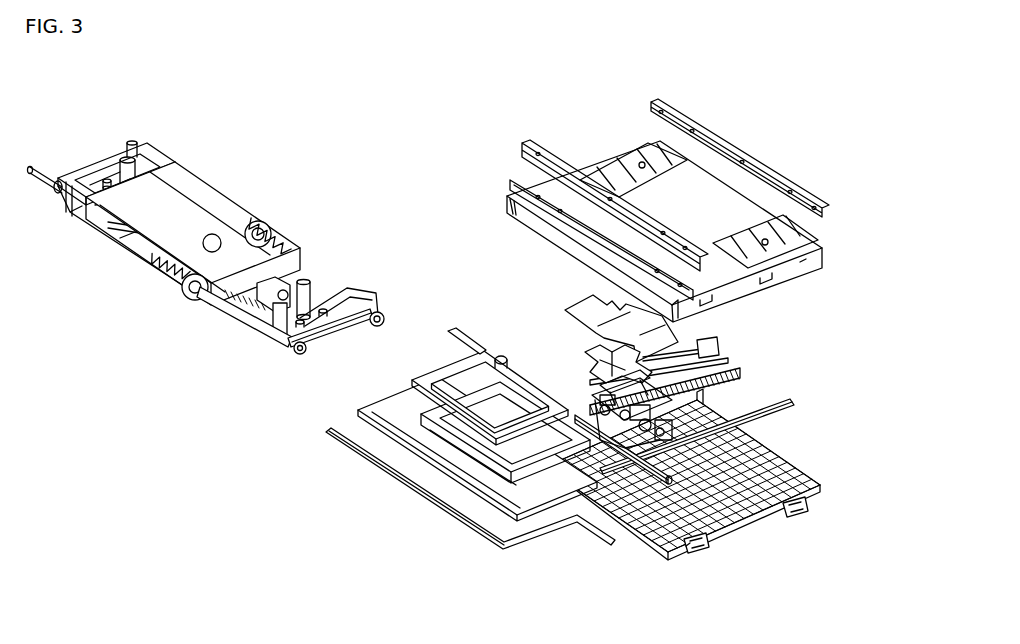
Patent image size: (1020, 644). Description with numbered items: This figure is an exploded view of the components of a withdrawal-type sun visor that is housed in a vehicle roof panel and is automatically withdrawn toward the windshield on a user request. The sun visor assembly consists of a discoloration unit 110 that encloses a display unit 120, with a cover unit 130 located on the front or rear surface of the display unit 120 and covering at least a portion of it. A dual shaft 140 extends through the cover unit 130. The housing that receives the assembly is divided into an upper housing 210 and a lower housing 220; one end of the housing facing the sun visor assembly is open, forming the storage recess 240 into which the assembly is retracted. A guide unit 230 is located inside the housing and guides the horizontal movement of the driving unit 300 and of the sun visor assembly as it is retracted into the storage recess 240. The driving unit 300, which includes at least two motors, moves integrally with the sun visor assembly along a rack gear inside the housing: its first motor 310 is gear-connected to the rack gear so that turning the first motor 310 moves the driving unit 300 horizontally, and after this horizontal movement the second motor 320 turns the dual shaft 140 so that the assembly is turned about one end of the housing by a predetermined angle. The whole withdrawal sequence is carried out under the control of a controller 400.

The discoloration unit 110 is at (540, 495).
The display unit 120 is at (497, 452).
The cover unit 130 is at (470, 422).
The dual shaft 140 is at (702, 543).
The upper housing 210 is at (610, 160).
The lower housing 220 is at (771, 510).
The guide unit 230 is at (793, 403).
The storage recess 240 is at (651, 546).
The driving unit 300 is at (206, 231).
The first motor 310 is at (137, 253).
The second motor 320 is at (235, 308).
The controller 400 is at (565, 297).